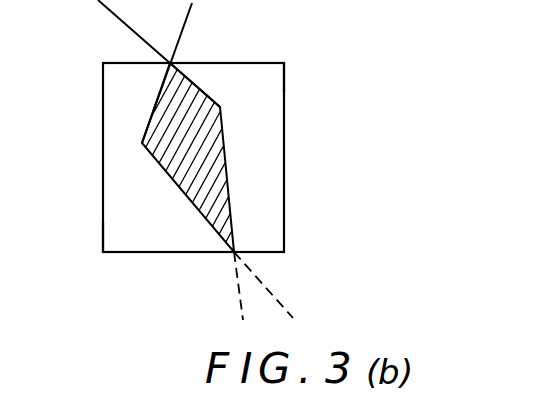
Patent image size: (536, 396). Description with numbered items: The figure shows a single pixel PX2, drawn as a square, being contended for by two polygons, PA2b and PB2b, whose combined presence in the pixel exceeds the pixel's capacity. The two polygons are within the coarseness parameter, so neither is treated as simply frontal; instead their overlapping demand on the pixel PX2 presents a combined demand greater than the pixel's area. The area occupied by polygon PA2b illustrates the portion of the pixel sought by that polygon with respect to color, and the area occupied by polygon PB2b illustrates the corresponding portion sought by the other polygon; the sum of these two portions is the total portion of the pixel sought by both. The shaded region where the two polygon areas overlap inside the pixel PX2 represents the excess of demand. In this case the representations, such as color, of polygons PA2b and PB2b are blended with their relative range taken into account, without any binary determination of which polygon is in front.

The pixel PX2 is at (285, 247).
The polygon PB2b is at (247, 80).
The polygon PA2b is at (140, 232).